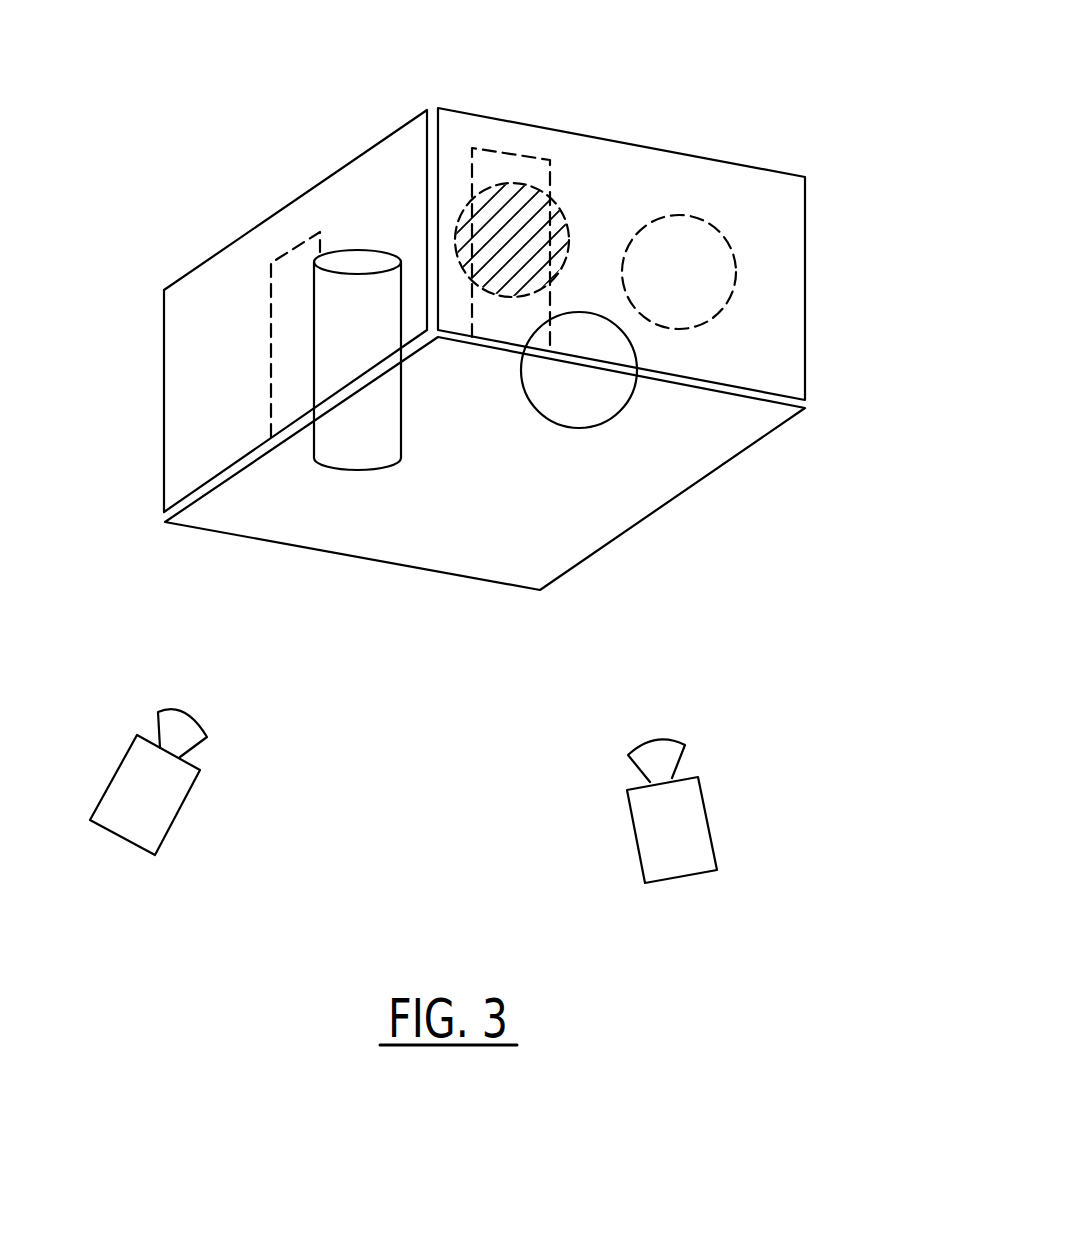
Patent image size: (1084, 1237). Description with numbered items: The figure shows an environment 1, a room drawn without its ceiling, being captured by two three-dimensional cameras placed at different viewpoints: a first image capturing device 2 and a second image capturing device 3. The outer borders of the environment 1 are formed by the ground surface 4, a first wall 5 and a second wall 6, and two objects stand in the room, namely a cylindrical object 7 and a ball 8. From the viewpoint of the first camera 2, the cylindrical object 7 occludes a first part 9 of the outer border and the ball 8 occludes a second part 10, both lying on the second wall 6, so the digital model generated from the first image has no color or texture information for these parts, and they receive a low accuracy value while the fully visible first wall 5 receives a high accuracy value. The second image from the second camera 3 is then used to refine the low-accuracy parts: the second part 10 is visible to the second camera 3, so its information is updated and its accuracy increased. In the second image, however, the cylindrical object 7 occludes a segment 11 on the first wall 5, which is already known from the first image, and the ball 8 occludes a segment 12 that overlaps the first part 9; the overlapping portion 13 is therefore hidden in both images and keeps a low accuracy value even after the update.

The environment 1 is at (776, 52).
The first 3D image capturing device 2 is at (158, 803).
The second 3D image capturing device 3 is at (690, 840).
The ground surface 4 is at (230, 520).
The first wall 5 is at (177, 365).
The second wall 6 is at (790, 291).
The cylindrical object 7 is at (390, 387).
The ball 8 is at (550, 410).
The first part 9 is at (507, 150).
The second part 10 is at (713, 236).
The segment 11 is at (285, 260).
The segment 12 is at (565, 218).
The portion 13 is at (492, 210).